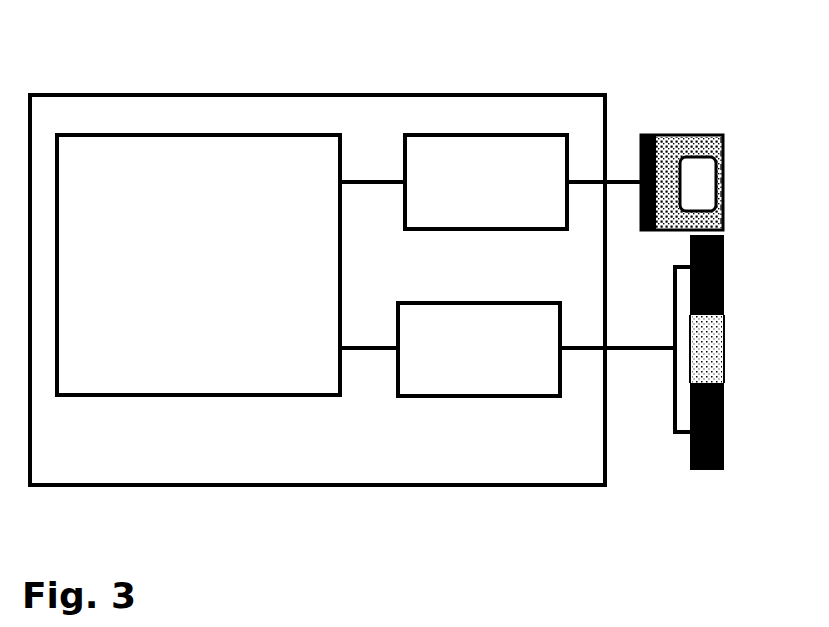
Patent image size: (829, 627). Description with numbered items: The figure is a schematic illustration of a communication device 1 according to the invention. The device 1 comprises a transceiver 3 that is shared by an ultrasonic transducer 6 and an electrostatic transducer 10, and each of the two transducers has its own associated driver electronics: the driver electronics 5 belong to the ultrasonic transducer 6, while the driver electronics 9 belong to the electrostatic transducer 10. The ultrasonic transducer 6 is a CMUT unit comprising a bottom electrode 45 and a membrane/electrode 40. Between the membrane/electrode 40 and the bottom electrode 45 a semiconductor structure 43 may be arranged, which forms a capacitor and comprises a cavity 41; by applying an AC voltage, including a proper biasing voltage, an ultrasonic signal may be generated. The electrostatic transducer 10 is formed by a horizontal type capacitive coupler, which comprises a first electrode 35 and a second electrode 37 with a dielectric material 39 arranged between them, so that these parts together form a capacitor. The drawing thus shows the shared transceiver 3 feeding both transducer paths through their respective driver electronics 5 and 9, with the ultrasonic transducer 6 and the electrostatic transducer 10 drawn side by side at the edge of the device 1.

The communication device 1 is at (420, 487).
The transceiver 3 is at (228, 397).
The driver electronics 5 is at (500, 230).
The ultrasonic transducer 6 is at (665, 130).
The driver electronics 9 is at (510, 398).
The electrostatic transducer 10 is at (728, 394).
The first electrode 35 is at (724, 265).
The second electrode 37 is at (724, 443).
The dielectric material 39 is at (724, 343).
The membrane/electrode 40 is at (723, 183).
The cavity 41 is at (705, 163).
The semiconductor structure 43 is at (668, 135).
The bottom electrode 45 is at (645, 135).